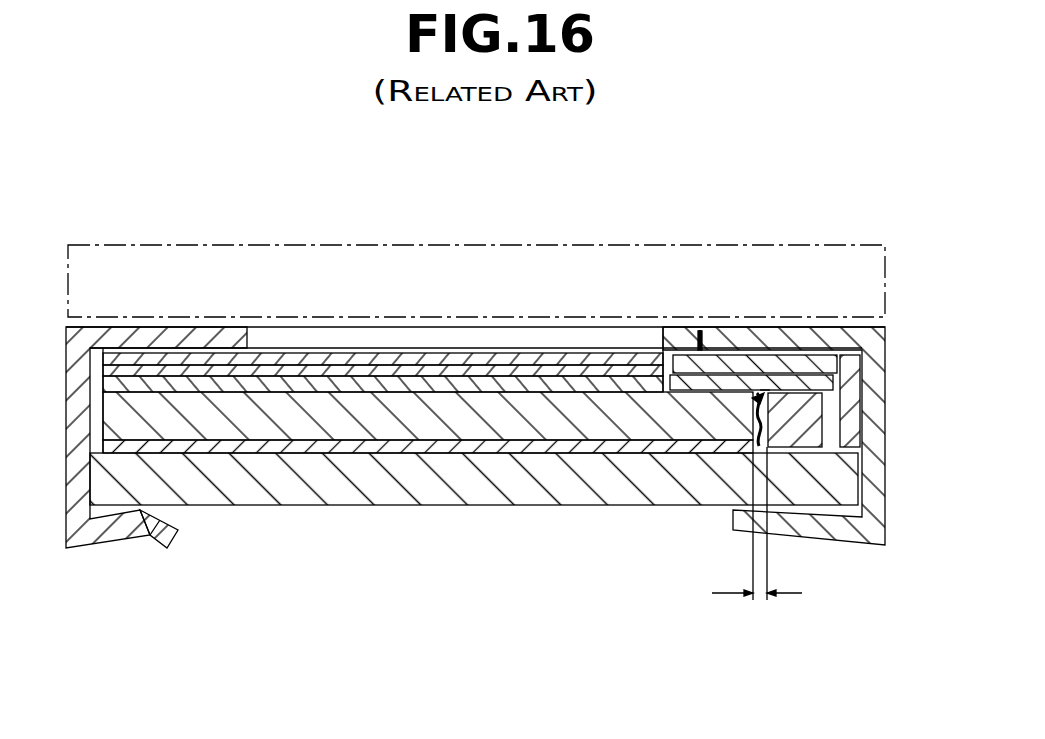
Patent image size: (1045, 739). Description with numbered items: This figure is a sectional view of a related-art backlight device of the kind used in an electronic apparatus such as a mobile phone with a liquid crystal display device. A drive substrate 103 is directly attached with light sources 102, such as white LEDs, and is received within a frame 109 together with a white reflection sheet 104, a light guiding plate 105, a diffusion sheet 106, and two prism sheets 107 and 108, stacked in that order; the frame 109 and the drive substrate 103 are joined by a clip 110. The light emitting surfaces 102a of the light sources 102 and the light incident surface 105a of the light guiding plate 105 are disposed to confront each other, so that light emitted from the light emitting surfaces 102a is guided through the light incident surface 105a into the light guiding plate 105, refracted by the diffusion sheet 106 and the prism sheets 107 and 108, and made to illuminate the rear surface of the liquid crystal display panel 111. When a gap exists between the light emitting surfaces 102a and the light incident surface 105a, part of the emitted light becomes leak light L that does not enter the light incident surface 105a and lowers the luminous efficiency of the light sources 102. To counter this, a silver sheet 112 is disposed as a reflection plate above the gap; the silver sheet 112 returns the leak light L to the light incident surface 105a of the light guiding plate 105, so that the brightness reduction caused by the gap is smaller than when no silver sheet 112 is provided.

The light source 102 is at (838, 462).
The light emitting surface 102a is at (778, 440).
The drive substrate 103 is at (555, 490).
The reflection sheet 104 is at (512, 447).
The light guiding plate 105 is at (449, 420).
The light incident surface 105a is at (755, 398).
The diffusion sheet 106 is at (388, 385).
The prism sheet 107 is at (307, 370).
The prism sheet 108 is at (270, 357).
The frame 109 is at (66, 503).
The clip 110 is at (885, 465).
The liquid crystal display panel 111 is at (302, 278).
The silver sheet 112 is at (712, 375).
The leak light L is at (765, 385).